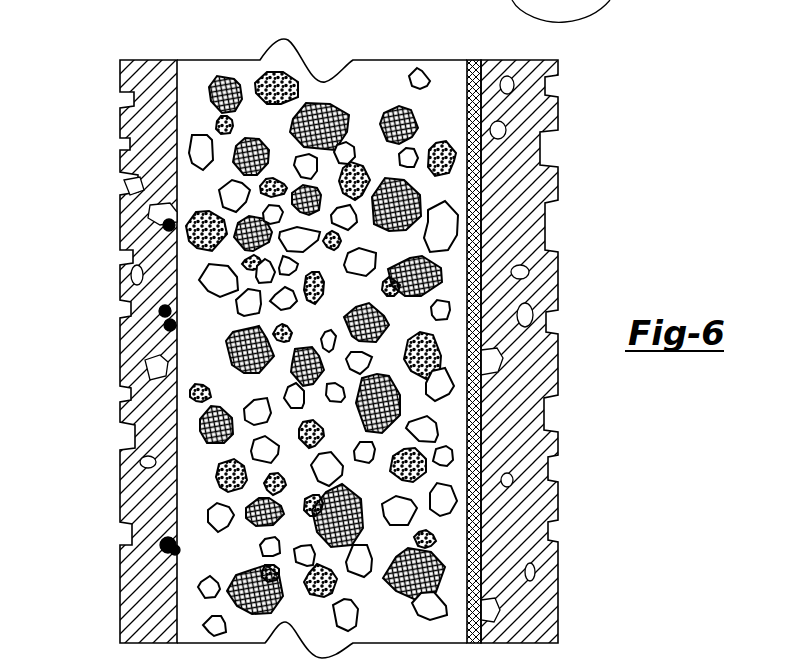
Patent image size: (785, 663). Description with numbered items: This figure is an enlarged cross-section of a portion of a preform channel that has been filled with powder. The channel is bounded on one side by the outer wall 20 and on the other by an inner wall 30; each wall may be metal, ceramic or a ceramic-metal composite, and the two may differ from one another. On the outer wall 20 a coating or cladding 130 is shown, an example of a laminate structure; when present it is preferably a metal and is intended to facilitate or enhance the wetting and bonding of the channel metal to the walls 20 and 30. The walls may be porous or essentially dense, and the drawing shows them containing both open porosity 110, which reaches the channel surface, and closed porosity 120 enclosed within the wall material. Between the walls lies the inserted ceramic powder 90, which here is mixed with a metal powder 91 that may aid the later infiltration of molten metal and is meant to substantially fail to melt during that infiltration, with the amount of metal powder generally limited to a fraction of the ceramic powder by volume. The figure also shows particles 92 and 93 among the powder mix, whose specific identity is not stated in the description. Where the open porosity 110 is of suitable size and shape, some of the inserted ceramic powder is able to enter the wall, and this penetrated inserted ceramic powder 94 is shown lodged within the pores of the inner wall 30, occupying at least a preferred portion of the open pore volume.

The outer wall 20 is at (533, 258).
The inner wall 30 is at (125, 380).
The inserted ceramic powder 90 is at (238, 70).
The metal powder 91 is at (417, 113).
The uncoated particle 92 is at (448, 228).
The second coated particle 93 is at (366, 165).
The penetrated inserted ceramic powder 94 is at (167, 545).
The open porosity 110 is at (133, 190).
The closed porosity 120 is at (148, 462).
The coating or cladding 130 is at (476, 393).